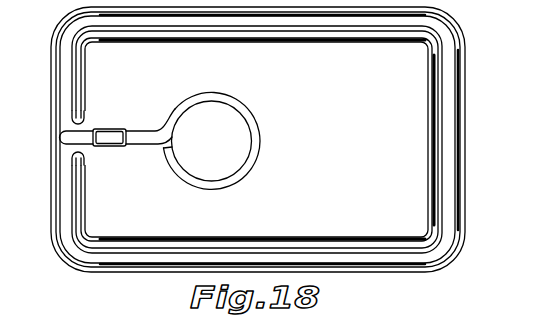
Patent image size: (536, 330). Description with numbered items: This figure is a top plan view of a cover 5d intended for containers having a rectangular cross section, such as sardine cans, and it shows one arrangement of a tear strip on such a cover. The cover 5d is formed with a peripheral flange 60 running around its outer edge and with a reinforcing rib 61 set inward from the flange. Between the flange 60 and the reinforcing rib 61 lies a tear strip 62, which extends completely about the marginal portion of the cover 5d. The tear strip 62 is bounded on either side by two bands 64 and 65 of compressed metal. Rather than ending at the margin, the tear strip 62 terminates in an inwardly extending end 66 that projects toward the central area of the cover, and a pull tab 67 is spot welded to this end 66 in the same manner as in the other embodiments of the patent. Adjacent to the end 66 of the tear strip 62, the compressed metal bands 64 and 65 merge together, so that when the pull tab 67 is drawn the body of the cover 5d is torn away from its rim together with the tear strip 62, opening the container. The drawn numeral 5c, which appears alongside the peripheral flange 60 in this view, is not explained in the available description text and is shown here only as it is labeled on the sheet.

The tray 5c is at (468, 134).
The cover 5d is at (242, 140).
The peripheral flange 60 is at (458, 103).
The reinforcing rib 61 is at (425, 75).
The tear strip 62 is at (443, 180).
The band of compressed metal 64 is at (453, 210).
The band of compressed metal 65 is at (437, 227).
The inwardly extending end 66 is at (88, 141).
The pull tab 67 is at (131, 138).